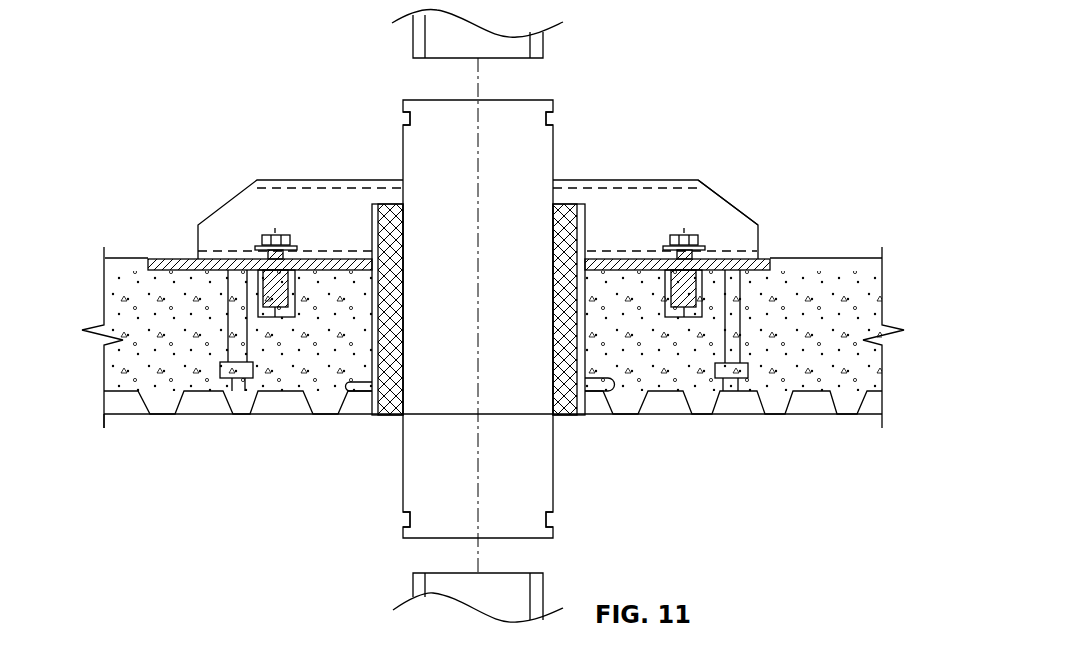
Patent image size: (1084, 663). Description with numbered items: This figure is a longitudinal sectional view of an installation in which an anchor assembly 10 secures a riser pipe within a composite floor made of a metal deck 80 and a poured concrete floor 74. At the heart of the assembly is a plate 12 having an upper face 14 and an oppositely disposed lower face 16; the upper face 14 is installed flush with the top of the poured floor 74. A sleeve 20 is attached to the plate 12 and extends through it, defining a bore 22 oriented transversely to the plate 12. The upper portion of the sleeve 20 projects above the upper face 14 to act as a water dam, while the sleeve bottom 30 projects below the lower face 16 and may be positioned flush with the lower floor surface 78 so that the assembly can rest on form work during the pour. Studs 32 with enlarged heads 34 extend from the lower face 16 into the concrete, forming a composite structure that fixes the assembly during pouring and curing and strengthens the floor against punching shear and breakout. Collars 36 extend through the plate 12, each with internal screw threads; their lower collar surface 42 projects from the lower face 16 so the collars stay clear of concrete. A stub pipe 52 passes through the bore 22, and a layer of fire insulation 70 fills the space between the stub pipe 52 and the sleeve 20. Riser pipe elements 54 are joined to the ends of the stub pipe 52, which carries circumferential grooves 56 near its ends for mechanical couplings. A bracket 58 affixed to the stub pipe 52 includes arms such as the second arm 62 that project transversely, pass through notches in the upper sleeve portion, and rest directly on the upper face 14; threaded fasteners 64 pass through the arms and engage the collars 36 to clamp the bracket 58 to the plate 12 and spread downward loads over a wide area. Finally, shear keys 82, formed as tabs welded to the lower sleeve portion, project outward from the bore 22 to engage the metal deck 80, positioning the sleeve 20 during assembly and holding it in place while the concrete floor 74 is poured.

The anchor assembly 10 is at (817, 118).
The plate 12 is at (760, 270).
The upper face 14 is at (225, 255).
The lower face 16 is at (342, 272).
The sleeve 20 is at (588, 360).
The bore 22 is at (503, 315).
The sleeve bottom 30 is at (373, 415).
The studs 32 is at (237, 317).
The enlarged heads 34 is at (225, 395).
The collars 36 is at (257, 295).
The lower collar surface 42 is at (318, 203).
The stub pipe 52 is at (545, 170).
The riser pipe elements 54 is at (543, 45).
The circumferential grooves 56 is at (553, 117).
The bracket 58 is at (734, 195).
The second arm 62 is at (695, 197).
The threaded fasteners 64 is at (275, 229).
The fire insulation 70 is at (377, 415).
The poured floor 74 is at (105, 365).
The lower floor surface 78 is at (847, 415).
The composite metal deck 80 is at (130, 408).
The shear keys 82 is at (597, 391).